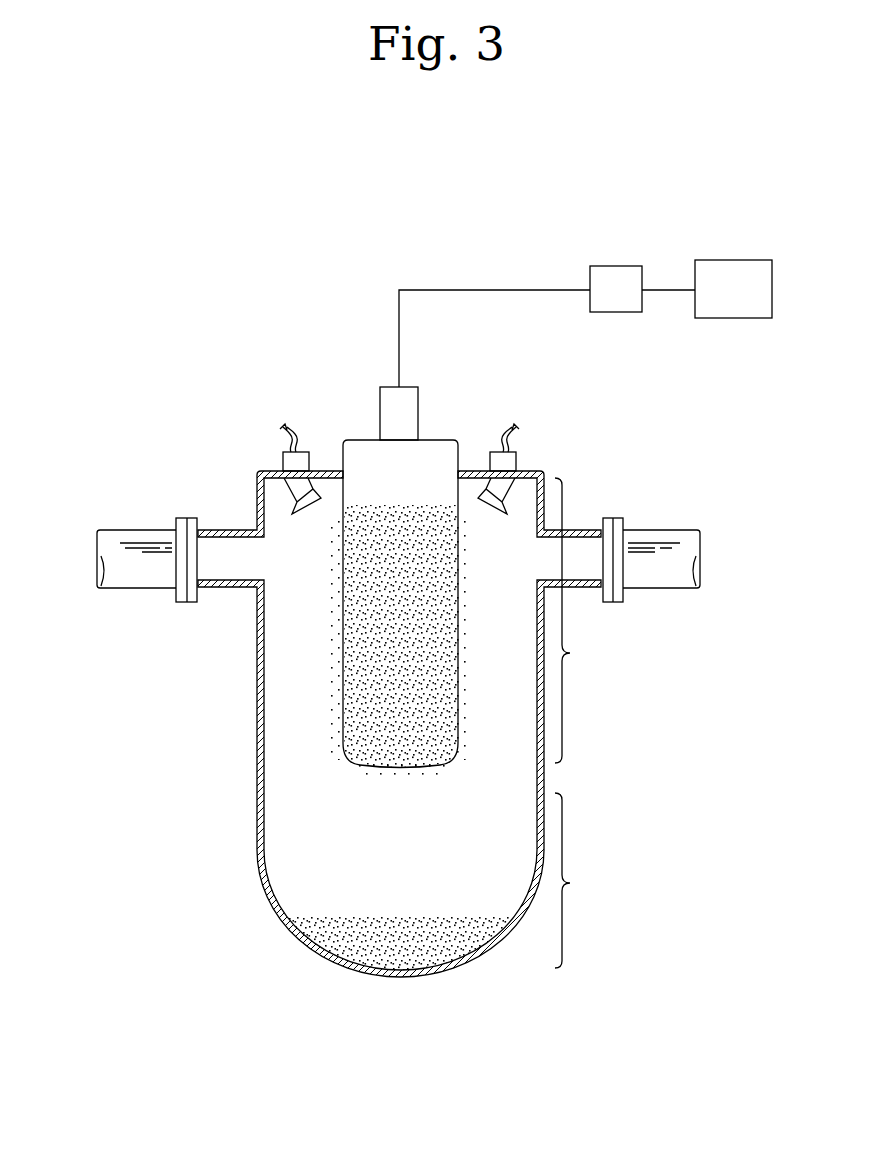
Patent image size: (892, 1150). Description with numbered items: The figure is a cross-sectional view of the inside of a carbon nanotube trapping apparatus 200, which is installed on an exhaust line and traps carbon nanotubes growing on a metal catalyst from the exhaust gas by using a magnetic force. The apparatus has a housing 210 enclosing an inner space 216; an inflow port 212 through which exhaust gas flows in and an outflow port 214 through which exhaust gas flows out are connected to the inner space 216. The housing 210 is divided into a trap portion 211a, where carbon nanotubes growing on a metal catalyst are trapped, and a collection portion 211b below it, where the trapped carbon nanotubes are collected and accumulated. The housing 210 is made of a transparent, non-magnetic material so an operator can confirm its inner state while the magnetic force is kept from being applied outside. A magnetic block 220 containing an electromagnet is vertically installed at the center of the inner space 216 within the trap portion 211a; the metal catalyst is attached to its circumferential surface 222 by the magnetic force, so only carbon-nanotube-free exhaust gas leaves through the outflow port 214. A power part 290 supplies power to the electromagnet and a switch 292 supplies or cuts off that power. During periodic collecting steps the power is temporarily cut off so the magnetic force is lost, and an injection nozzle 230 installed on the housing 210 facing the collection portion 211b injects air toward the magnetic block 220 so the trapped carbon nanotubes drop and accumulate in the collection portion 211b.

The carbon nanotube trapping apparatus 200 is at (262, 237).
The housing 210 is at (255, 468).
The trap portion 211a is at (590, 620).
The collection portion 211b is at (590, 880).
The inflow port 212 is at (230, 530).
The outflow port 214 is at (578, 530).
The inner space 216 is at (290, 665).
The magnetic block 220 is at (462, 439).
The circumferential surface 222 is at (342, 708).
The injection nozzle 230 is at (524, 462).
The power part 290 is at (736, 260).
The switch 292 is at (618, 266).